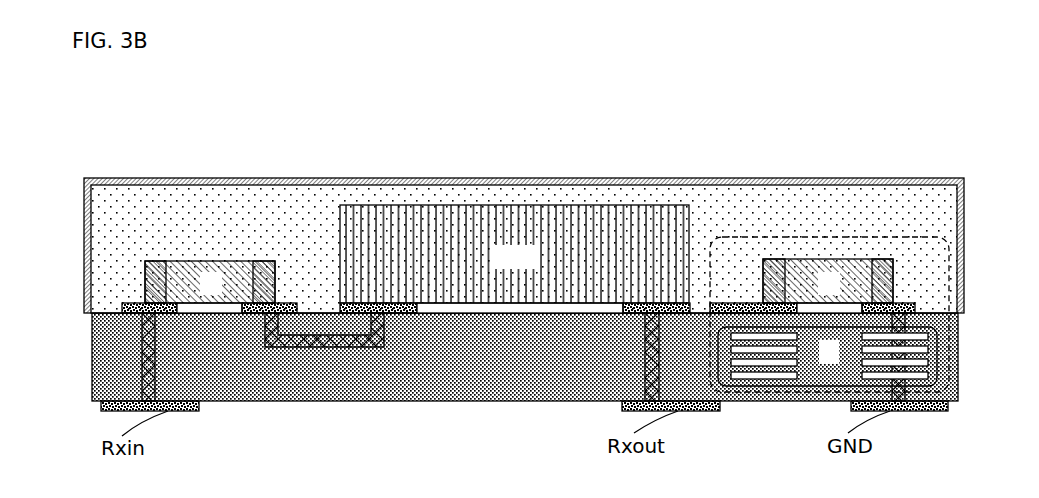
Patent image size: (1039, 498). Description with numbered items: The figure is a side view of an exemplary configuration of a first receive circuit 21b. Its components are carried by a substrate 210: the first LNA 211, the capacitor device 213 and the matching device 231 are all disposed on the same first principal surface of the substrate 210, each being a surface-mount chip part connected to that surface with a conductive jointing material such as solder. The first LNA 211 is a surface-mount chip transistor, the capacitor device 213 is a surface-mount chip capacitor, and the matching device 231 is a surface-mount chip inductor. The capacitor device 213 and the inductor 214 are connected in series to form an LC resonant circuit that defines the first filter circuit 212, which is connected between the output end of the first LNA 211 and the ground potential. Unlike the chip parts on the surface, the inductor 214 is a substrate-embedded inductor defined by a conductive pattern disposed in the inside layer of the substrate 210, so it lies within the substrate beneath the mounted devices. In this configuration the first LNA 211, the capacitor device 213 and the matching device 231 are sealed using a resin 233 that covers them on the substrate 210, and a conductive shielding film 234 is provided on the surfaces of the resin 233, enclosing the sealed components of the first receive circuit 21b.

The first receive circuit 21b is at (744, 78).
The substrate 210 is at (482, 370).
The first LNA 211 is at (536, 205).
The first filter circuit 212 is at (905, 237).
The capacitor device 213 is at (828, 259).
The inductor 214 is at (748, 326).
The matching device 231 is at (198, 261).
The resin 233 is at (297, 205).
The conductive shielding film 234 is at (387, 180).